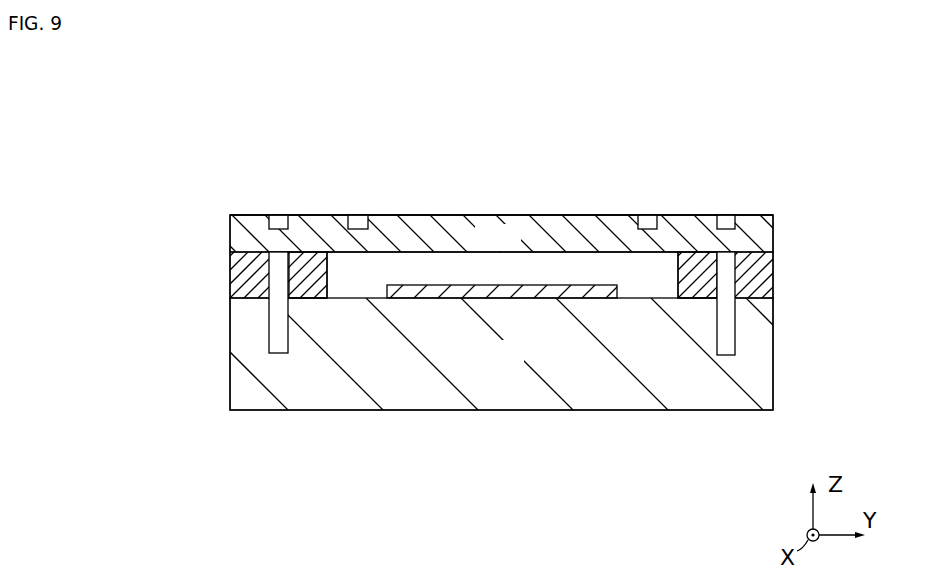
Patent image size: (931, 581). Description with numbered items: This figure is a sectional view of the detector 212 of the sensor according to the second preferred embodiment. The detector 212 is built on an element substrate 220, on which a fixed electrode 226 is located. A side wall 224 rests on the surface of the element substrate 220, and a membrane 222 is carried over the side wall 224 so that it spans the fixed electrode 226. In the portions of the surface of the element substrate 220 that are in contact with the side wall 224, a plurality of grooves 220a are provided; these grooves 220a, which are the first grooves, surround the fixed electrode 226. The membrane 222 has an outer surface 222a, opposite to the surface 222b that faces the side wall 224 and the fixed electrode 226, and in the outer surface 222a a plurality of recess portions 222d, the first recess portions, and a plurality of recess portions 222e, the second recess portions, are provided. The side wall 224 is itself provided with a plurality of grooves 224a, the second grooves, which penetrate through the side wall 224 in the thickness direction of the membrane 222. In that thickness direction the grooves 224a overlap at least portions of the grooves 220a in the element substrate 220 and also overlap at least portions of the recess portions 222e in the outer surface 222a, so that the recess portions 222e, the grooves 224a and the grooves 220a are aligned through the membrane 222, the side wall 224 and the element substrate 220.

The detector 212 is at (222, 194).
The element substrate 220 is at (520, 369).
The grooves 220a is at (276, 327).
The membrane 222 is at (518, 249).
The outer surface 222a is at (500, 215).
The lower surface of first layer 222b is at (645, 253).
The recess portions 222d is at (357, 215).
The recess portions 222e is at (278, 215).
The side wall 224 is at (242, 277).
The grooves 224a is at (288, 272).
The fixed electrode 226 is at (497, 288).